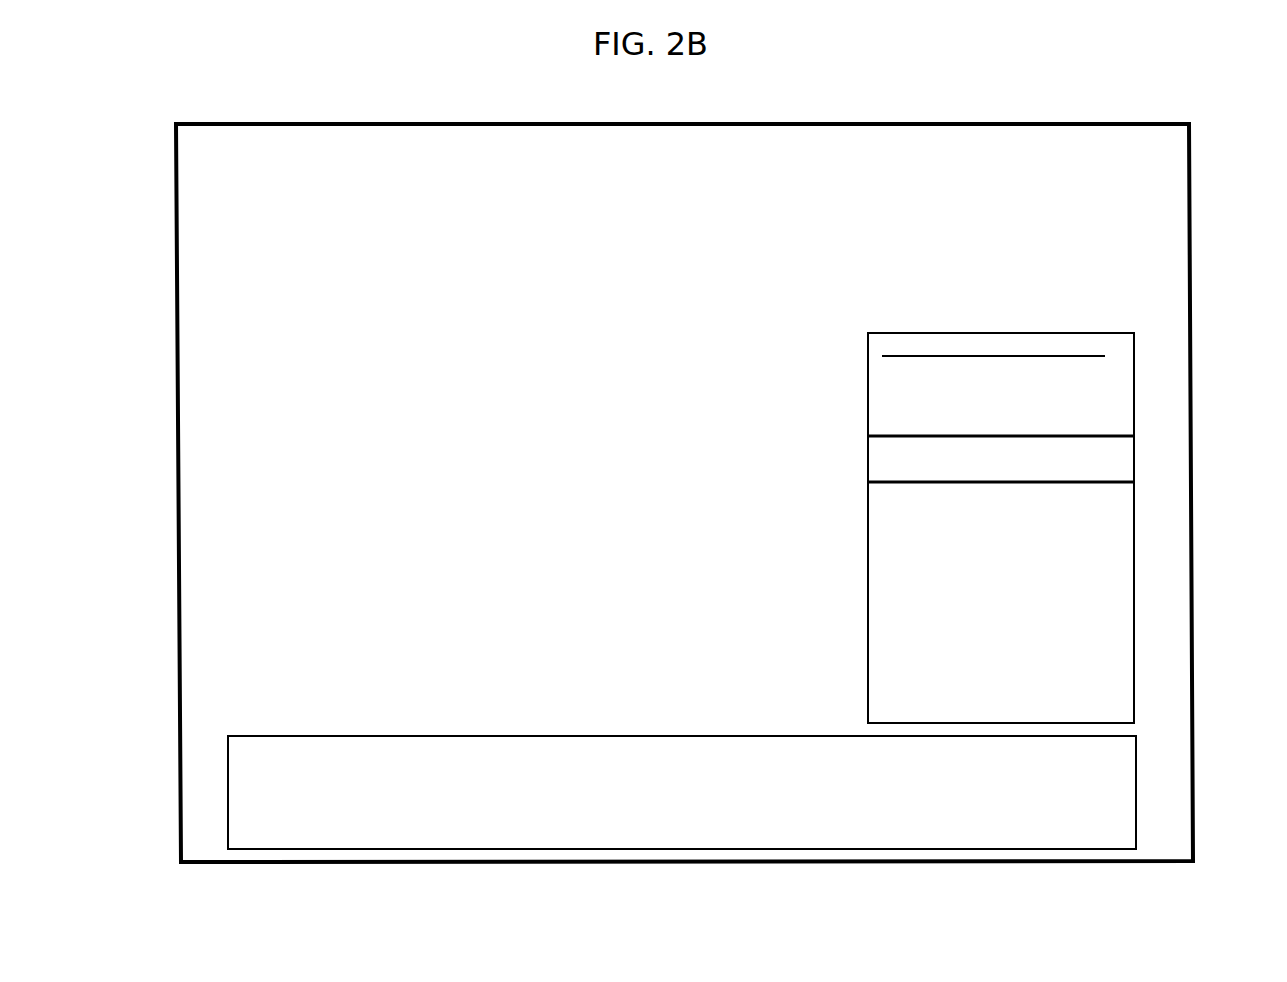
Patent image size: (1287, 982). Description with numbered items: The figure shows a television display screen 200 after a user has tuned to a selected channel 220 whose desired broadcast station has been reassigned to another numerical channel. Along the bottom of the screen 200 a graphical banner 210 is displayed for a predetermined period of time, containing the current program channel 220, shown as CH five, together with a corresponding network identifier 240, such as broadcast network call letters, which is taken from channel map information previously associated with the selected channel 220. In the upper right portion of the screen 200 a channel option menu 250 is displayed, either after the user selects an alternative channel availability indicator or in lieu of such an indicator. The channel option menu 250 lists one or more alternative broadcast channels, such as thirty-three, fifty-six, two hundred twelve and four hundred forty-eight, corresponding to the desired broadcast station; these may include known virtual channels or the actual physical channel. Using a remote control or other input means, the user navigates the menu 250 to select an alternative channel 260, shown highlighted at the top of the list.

The display screen 200 is at (1163, 153).
The graphical banner 210 is at (1136, 815).
The selected channel 220 is at (287, 750).
The network identifier 240 is at (275, 837).
The channel option menu 250 is at (1092, 340).
The alternative channel 260 is at (1121, 458).